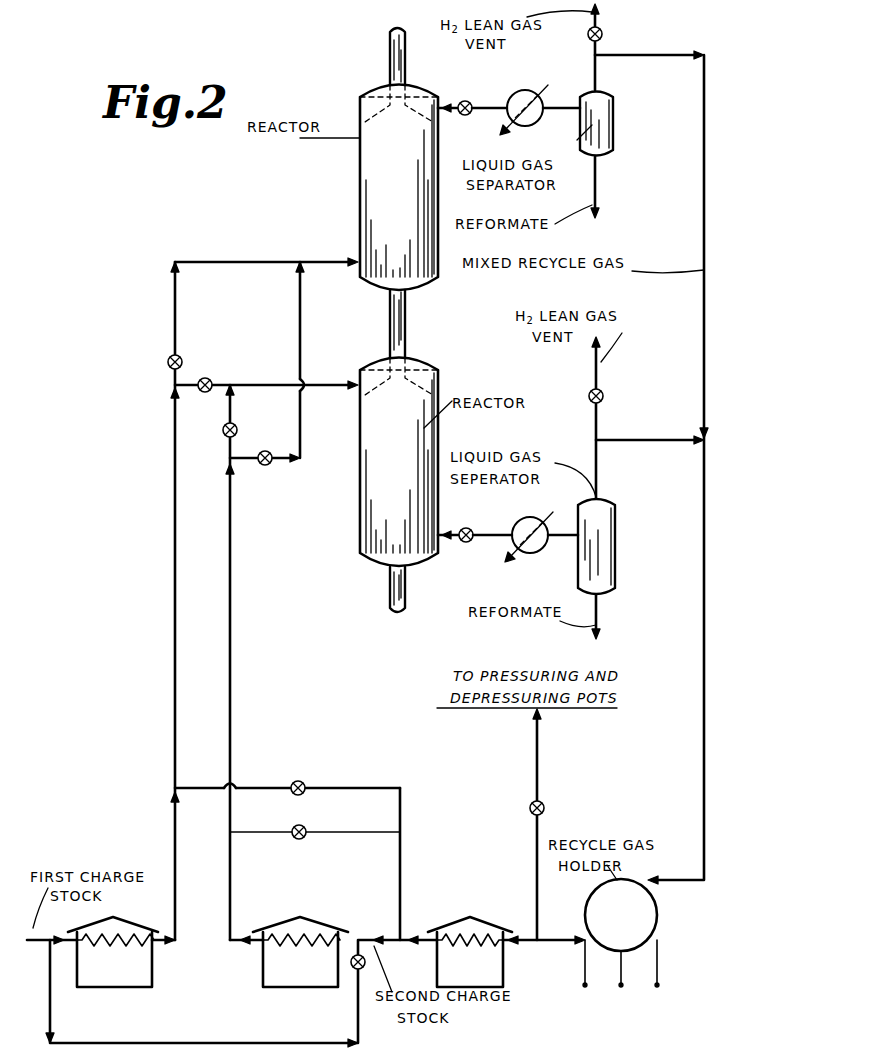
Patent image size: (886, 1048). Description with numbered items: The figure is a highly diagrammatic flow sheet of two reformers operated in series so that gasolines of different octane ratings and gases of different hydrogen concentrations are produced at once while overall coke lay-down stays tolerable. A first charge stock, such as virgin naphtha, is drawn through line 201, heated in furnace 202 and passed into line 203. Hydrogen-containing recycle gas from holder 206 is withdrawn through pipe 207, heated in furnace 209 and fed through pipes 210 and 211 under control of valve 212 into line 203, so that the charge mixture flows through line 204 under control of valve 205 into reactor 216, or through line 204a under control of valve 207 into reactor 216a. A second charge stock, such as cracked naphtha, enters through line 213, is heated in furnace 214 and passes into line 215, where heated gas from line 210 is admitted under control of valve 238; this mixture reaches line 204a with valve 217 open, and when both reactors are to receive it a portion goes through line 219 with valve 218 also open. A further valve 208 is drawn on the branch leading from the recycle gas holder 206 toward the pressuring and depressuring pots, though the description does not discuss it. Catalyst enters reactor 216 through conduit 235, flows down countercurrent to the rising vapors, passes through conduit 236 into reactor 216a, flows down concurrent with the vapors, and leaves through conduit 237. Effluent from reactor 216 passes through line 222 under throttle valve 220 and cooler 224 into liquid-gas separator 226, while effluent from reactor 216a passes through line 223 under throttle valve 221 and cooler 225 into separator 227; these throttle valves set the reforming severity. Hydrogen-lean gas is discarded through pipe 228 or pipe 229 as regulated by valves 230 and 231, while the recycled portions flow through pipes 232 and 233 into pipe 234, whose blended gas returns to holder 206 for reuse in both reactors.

The line 201 is at (65, 931).
The furnace 202 is at (96, 996).
The line 203 is at (168, 597).
The line 204 is at (246, 258).
The line 204a is at (188, 376).
The valve 205 is at (167, 363).
The holder 206 is at (658, 901).
The pipe / valve 207 is at (207, 397).
The valve 208 is at (530, 808).
The furnace 209 is at (504, 977).
The pipe 210 is at (403, 898).
The pipe 211 is at (250, 790).
The valve 212 is at (306, 790).
The line 213 is at (346, 937).
The furnace 214 is at (280, 996).
The line 215 is at (232, 598).
The reactor 216 is at (360, 156).
The reactor 216a is at (360, 440).
The valve 217 is at (222, 431).
The valve 218 is at (254, 468).
The line 219 is at (302, 322).
The throttle valve 220 is at (446, 116).
The throttle valve 221 is at (452, 542).
The reformate line 222 is at (444, 106).
The reformate line 223 is at (448, 532).
The cooler 224 is at (535, 86).
The cooler 225 is at (536, 513).
The liquid-gas separator 226 is at (614, 113).
The gas-liquid separator 227 is at (616, 541).
The pipe 228 is at (599, 14).
The pipe 229 is at (600, 368).
The valve 230 is at (587, 34).
The valve 231 is at (603, 397).
The pipe 232 is at (666, 52).
The pipe 233 is at (661, 436).
The pipe 234 is at (707, 222).
The conduit 235 is at (403, 52).
The conduit 236 is at (405, 327).
The conduit 237 is at (405, 600).
The valve 238 is at (304, 840).